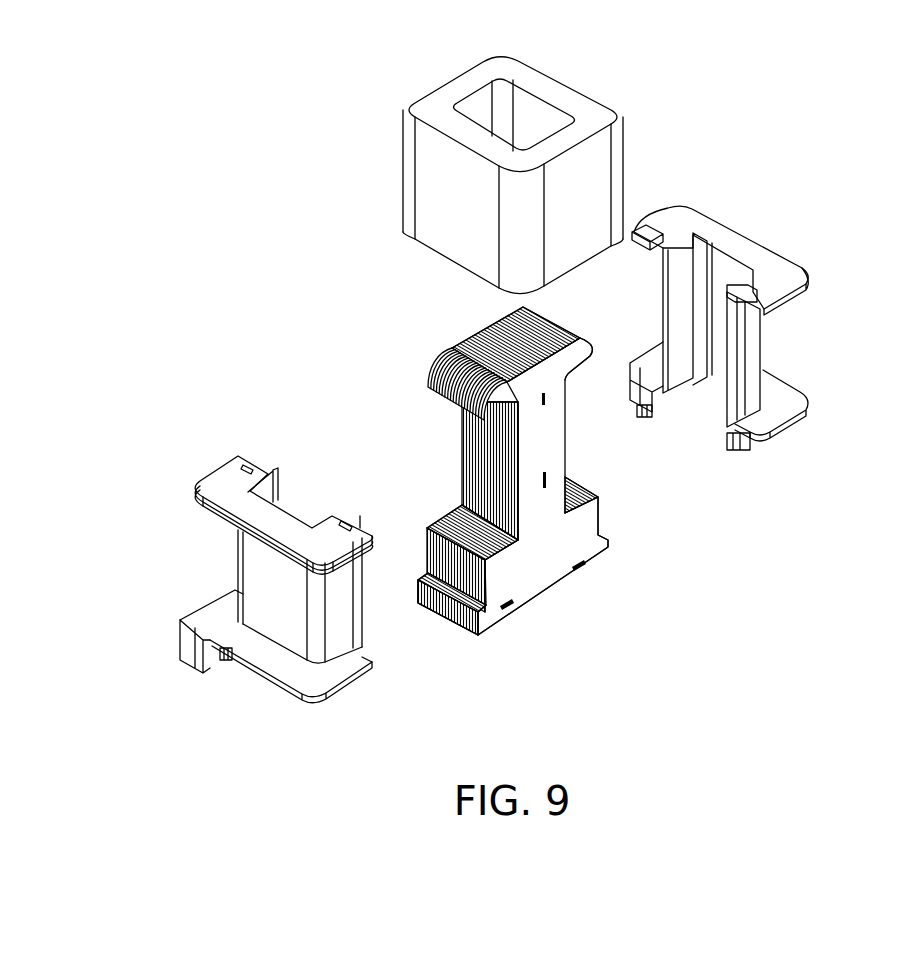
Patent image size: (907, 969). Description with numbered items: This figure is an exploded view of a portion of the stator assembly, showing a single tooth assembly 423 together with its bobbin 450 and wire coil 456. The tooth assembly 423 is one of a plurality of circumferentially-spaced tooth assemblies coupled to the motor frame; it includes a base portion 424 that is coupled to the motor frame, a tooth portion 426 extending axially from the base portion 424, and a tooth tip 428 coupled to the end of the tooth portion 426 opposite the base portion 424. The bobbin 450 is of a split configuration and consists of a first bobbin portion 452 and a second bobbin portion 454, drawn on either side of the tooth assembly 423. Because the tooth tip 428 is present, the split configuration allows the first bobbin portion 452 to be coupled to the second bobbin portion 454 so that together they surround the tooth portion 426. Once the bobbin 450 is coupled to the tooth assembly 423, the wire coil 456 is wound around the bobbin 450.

The tooth assembly 423 is at (381, 390).
The base portion 424 is at (540, 582).
The tooth portion 426 is at (545, 435).
The tooth tip 428 is at (572, 357).
The bobbin 450 is at (207, 438).
The first bobbin portion 452 is at (205, 490).
The second bobbin portion 454 is at (794, 278).
The wire coil 456 is at (543, 80).